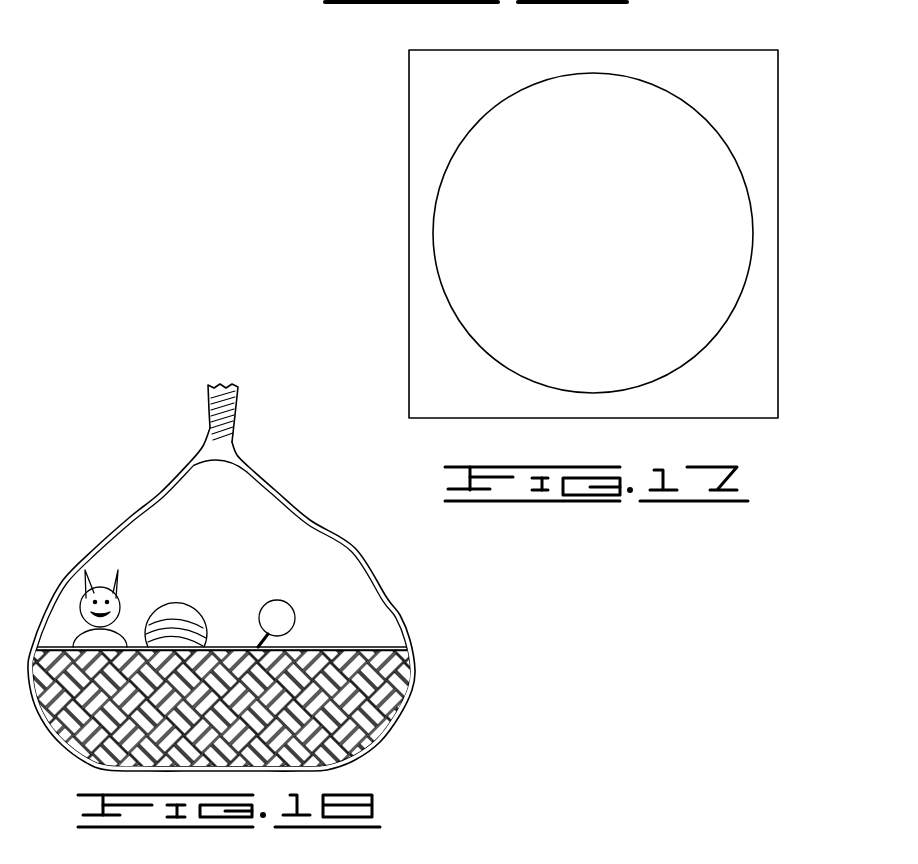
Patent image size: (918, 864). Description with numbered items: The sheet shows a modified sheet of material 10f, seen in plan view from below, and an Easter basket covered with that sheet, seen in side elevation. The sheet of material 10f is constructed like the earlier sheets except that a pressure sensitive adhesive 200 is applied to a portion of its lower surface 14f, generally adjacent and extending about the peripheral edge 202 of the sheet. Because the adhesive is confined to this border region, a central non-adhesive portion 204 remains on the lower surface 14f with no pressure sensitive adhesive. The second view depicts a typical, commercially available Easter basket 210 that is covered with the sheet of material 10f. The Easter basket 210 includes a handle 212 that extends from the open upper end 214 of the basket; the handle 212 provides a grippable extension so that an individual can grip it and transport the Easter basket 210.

In FIG. 17, the sheet of material 10f is at (653, 47).
In FIG. 18, the sheet of material 10f is at (358, 547).
In FIG. 17, the lower surface 14f is at (487, 213).
In FIG. 17, the pressure sensitive adhesive 200 is at (712, 62).
In FIG. 17, the peripheral edge 202 is at (784, 65).
In FIG. 17, the central non-adhesive portion 204 is at (560, 301).
In FIG. 18, the Easter basket 210 is at (380, 702).
In FIG. 18, the handle 212 is at (131, 521).
In FIG. 18, the open upper end 214 is at (222, 462).